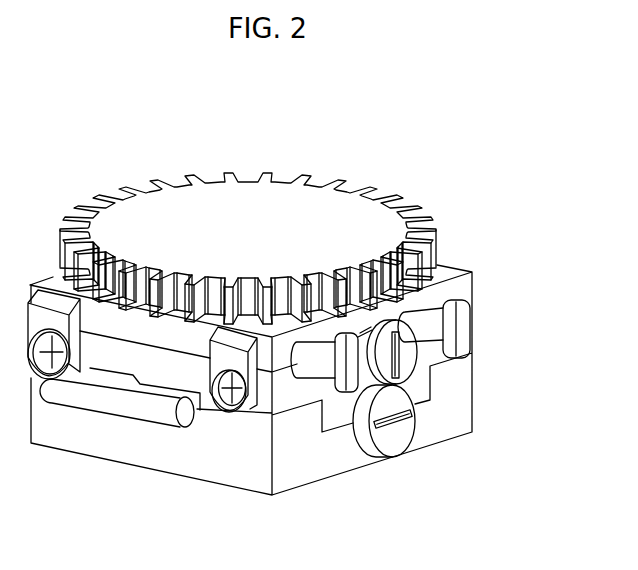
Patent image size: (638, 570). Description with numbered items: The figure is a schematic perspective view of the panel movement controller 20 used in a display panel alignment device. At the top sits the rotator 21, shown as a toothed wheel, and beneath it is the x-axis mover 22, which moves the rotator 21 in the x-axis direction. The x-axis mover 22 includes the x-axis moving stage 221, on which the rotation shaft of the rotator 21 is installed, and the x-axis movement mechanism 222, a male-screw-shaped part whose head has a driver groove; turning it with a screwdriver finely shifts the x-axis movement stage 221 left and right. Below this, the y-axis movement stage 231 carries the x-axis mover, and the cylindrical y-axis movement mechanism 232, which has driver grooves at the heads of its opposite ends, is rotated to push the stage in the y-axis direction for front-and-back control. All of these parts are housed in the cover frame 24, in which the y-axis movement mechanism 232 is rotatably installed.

The panel movement controller 20 is at (270, 118).
The rotator 21 is at (403, 200).
The x-axis mover 22 is at (537, 327).
The x-axis moving stage 221 is at (468, 333).
The x-axis movement mechanism 222 is at (408, 358).
The y-axis movement stage 231 is at (123, 410).
The y-axis movement mechanism 232 is at (395, 443).
The cover frame 24 is at (282, 362).